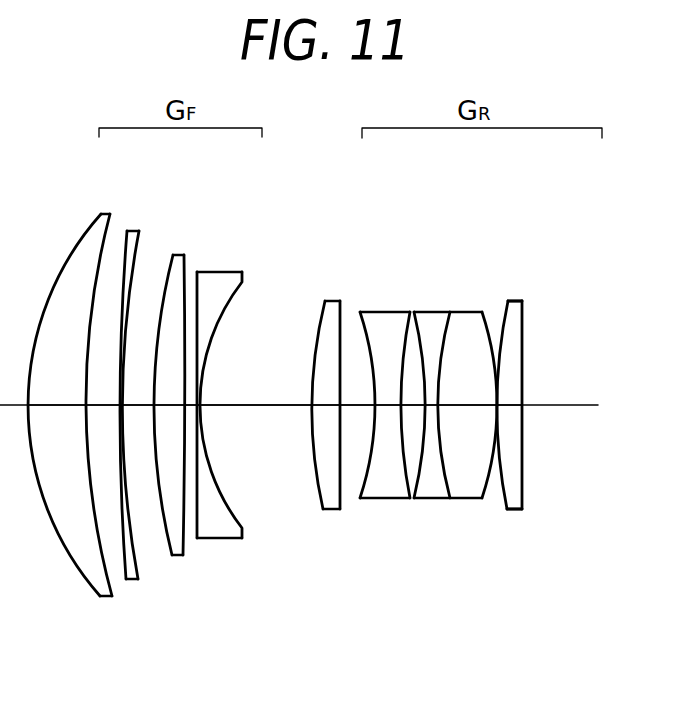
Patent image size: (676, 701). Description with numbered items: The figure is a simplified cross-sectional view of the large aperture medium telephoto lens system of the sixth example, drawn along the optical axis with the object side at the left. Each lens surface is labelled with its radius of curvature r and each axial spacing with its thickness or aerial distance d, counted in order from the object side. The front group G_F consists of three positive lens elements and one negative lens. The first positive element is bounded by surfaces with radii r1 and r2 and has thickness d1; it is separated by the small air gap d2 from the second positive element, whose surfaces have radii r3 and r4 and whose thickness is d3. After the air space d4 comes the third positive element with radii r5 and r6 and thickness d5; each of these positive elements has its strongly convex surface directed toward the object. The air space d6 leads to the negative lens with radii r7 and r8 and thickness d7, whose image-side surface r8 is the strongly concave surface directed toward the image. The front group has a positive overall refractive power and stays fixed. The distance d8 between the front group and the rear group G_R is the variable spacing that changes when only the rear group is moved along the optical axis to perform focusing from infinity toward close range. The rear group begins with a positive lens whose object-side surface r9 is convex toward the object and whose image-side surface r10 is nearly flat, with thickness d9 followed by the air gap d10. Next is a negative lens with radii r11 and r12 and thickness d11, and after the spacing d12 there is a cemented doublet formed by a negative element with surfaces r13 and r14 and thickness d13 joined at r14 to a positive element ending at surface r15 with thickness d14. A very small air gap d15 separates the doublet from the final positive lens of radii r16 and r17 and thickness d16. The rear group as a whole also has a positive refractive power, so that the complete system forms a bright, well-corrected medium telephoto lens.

The radius of curvature of the first lens surface r1 is at (101, 214).
The radius of curvature of the second lens surface r2 is at (111, 214).
The radius of curvature of the third lens surface r3 is at (128, 231).
The radius of curvature of the fourth lens surface r4 is at (140, 231).
The radius of curvature of the fifth lens surface r5 is at (173, 255).
The radius of curvature of the sixth lens surface r6 is at (184, 255).
The radius of curvature of the seventh lens surface r7 is at (197, 272).
The radius of curvature of the eighth lens surface r8 is at (242, 272).
The radius of curvature of the ninth lens surface r9 is at (326, 301).
The radius of curvature of the tenth lens surface r10 is at (340, 301).
The radius of curvature of the eleventh lens surface r11 is at (360, 312).
The radius of curvature of the twelfth lens surface r12 is at (410, 312).
The radius of curvature of the thirteenth lens surface r13 is at (450, 312).
The radius of curvature of the fourteenth lens surface r14 is at (482, 312).
The radius of curvature of the fifteenth lens surface r15 is at (509, 301).
The radius of curvature of the sixteenth lens surface r16 is at (522, 301).
The radius of curvature of the seventeenth lens surface r17 is at (510, 301).
The thickness of the first lens d1 is at (54, 405).
The aerial distance between the first and second lenses d2 is at (84, 405).
The thickness of the second lens d3 is at (101, 405).
The aerial distance between the second and third lenses d4 is at (138, 405).
The thickness of the third lens d5 is at (168, 405).
The aerial distance between the third lens and the negative lens d6 is at (190, 405).
The thickness of the negative lens d7 is at (199, 405).
The variable aerial distance between the front and rear groups d8 is at (272, 405).
The thickness of the first rear-group lens d9 is at (322, 405).
The aerial distance after the first rear-group lens d10 is at (353, 405).
The thickness of the rear-group negative lens d11 is at (387, 405).
The aerial distance before the cemented doublet d12 is at (412, 405).
The thickness of the negative doublet element d13 is at (430, 405).
The thickness of the positive doublet element d14 is at (465, 405).
The aerial distance between the doublet and the last lens d15 is at (500, 405).
The thickness of the last lens d16 is at (510, 405).